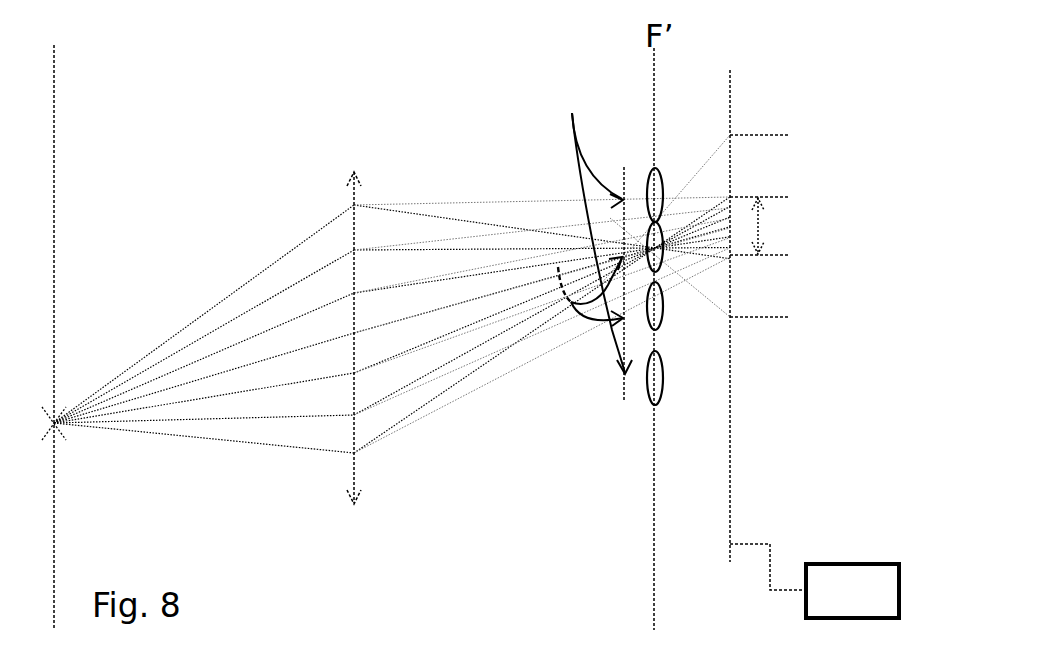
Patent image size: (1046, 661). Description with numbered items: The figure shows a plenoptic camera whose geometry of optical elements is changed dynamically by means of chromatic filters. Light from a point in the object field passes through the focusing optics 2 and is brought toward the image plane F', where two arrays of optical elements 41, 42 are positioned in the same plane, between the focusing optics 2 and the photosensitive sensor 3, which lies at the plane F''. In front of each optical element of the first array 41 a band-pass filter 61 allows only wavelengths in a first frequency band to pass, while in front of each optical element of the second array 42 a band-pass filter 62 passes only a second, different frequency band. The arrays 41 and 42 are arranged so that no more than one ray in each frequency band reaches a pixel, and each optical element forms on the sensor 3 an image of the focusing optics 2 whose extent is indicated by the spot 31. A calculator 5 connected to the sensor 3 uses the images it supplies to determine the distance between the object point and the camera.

The focusing optics 2 is at (355, 190).
The photosensitive sensor 3 is at (731, 106).
The spot size on detector 31 is at (774, 226).
The first array of optical elements 41 is at (667, 310).
The second array of optical elements 42 is at (669, 378).
The calculator 5 is at (814, 563).
The band-pass filter 61 is at (597, 226).
The band-pass filter 62 is at (585, 282).